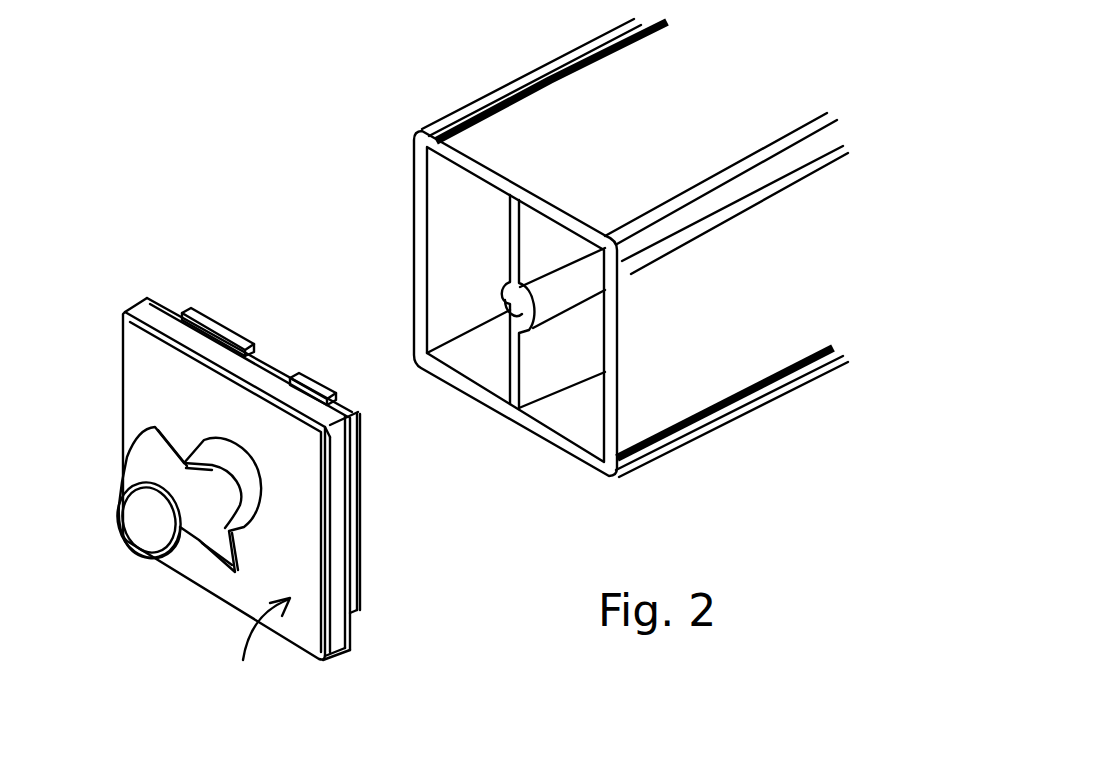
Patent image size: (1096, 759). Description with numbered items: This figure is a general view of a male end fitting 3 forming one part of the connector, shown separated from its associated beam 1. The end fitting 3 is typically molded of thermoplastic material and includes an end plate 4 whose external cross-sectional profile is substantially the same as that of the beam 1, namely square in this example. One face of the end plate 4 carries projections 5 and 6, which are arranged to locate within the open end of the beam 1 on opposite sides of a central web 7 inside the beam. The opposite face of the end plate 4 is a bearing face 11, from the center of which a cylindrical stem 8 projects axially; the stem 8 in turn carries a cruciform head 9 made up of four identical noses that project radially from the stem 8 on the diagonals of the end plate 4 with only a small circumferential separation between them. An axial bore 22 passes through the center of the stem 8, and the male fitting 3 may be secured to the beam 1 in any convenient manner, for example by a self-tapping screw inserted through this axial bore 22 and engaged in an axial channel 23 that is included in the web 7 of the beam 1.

The beam 1 is at (702, 358).
The end fitting 3 is at (203, 403).
The end plate 4 is at (260, 646).
The projection 5 is at (213, 330).
The projection 6 is at (318, 388).
The central web 7 is at (540, 362).
The cylindrical stem 8 is at (187, 525).
The cruciform head 9 is at (193, 563).
The bearing face 11 is at (157, 370).
The axial bore 22 is at (165, 522).
The axial channel 23 is at (568, 290).